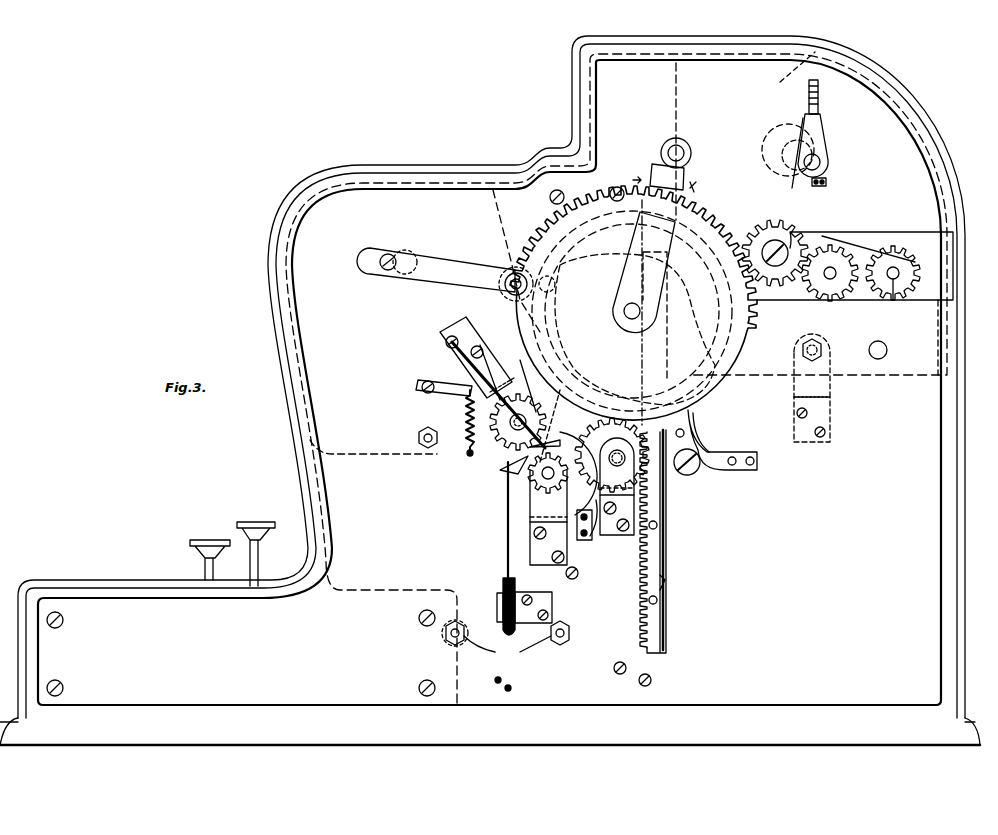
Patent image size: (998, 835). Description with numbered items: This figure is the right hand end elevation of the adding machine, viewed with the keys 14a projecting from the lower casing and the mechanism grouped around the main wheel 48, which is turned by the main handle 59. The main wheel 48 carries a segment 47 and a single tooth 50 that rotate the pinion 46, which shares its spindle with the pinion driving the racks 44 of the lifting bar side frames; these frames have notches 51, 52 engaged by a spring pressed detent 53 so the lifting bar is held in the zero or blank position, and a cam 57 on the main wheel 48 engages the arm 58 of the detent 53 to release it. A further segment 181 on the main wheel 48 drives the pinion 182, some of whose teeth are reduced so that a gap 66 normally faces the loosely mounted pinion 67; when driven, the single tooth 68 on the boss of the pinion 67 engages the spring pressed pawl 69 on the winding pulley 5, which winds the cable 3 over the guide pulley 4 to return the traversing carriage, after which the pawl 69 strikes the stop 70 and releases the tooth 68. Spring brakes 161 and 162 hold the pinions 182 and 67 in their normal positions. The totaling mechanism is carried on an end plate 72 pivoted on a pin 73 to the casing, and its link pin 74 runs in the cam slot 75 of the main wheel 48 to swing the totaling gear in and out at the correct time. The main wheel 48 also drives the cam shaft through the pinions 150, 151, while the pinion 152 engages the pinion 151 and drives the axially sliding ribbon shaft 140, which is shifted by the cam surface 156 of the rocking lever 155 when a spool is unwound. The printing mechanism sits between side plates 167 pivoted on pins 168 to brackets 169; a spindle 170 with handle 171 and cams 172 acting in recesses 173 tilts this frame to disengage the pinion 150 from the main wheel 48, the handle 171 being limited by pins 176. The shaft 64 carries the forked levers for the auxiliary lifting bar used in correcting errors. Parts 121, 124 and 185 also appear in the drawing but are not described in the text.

The cable 3 is at (507, 540).
The guide pulley 4 is at (503, 585).
The winding pulley 5 is at (634, 58).
The keys 14a is at (256, 532).
The racks 44 is at (652, 505).
The pinions 46 is at (640, 476).
The segments 47 is at (706, 206).
The main wheel 48 is at (633, 305).
The single teeth 50 is at (628, 198).
The notch 51 is at (660, 590).
The notch 52 is at (661, 576).
The spring pressed detent 53 is at (698, 425).
The cam 57 is at (515, 336).
The arm 58 is at (700, 392).
The main handle 59 is at (668, 153).
The shaft 64 is at (887, 350).
The gap 66 is at (585, 420).
The loosely mounted pinion 67 is at (540, 478).
The single tooth 68 is at (540, 460).
The spring pressed pawl 69 is at (500, 468).
The stop 70 is at (560, 548).
The end plate 72 is at (410, 205).
The pin 73 is at (418, 438).
The pin 74 is at (556, 280).
The cam slot 75 is at (596, 232).
The dashed guide line 121 is at (678, 86).
The base plate 124 is at (908, 464).
The shaft 140 is at (899, 304).
The pinion 150 is at (784, 234).
The pinion 151 is at (830, 246).
The pinion 152 is at (893, 246).
The rocking lever 155 is at (822, 236).
The cam surface 156 is at (925, 255).
The spring brake 161 is at (442, 396).
The spring brake 162 is at (606, 530).
The side plate 167 is at (812, 54).
The pin 168 is at (815, 358).
The bracket 169 is at (831, 392).
The spindle 170 is at (795, 162).
The handle 171 is at (820, 132).
The cam 172 is at (796, 135).
The recess 173 is at (780, 140).
The pin 176 is at (818, 142).
The segment 181 is at (542, 218).
The pinion 182 is at (548, 415).
The arm 185 is at (444, 262).